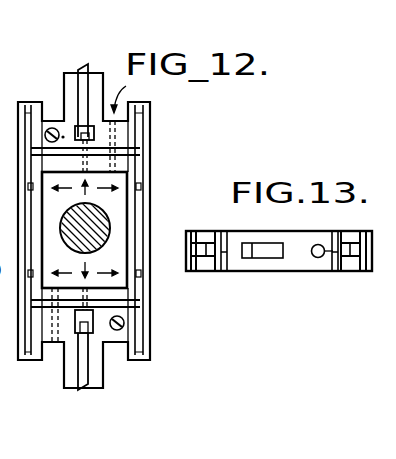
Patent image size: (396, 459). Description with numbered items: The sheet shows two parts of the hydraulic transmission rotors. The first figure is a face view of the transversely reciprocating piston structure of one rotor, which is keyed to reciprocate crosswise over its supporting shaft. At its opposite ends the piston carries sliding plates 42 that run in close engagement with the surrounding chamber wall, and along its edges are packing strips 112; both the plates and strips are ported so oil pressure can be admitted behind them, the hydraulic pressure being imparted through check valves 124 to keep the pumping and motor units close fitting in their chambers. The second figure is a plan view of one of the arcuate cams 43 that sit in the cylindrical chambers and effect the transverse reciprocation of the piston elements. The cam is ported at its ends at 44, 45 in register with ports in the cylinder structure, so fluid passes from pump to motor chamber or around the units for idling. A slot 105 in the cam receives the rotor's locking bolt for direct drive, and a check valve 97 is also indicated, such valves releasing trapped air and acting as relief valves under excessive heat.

In FIG. 12, the sliding plates 42 is at (80, 70).
In FIG. 12, the packing strips 112 is at (123, 153).
In FIG. 12, the check valves 124 is at (113, 137).
In FIG. 13, the arcuate cams 43 is at (230, 230).
In FIG. 13, the port 44 is at (209, 272).
In FIG. 13, the port 45 is at (343, 272).
In FIG. 13, the check valves 97 is at (322, 246).
In FIG. 13, the slot 105 is at (265, 251).